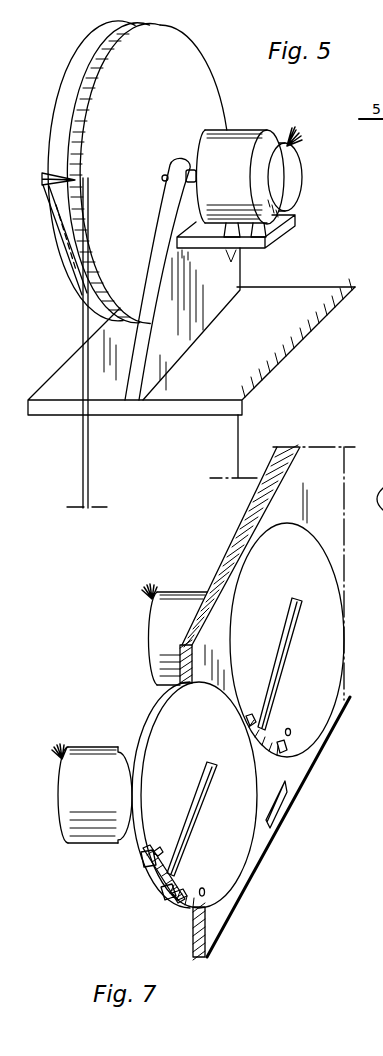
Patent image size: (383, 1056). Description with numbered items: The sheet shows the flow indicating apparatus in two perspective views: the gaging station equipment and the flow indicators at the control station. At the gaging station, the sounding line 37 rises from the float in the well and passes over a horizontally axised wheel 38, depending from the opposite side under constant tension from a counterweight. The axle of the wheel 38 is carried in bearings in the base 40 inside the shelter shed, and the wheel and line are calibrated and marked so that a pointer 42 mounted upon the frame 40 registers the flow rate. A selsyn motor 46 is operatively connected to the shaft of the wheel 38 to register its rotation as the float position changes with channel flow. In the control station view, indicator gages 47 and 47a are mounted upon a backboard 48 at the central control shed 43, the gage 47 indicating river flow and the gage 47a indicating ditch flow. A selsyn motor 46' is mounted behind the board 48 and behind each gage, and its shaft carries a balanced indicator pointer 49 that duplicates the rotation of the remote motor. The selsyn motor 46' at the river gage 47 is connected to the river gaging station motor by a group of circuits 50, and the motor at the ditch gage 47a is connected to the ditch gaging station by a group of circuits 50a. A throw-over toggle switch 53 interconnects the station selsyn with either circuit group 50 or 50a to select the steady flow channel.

In FIG. 5, the sounding line 37 is at (87, 457).
In FIG. 5, the wheel 38 is at (137, 172).
In FIG. 5, the base 40 is at (191, 378).
In FIG. 5, the pointer 42 is at (56, 174).
In FIG. 7, the central control shed 43 is at (371, 490).
In FIG. 5, the selsyn motor 46 is at (249, 183).
In FIG. 7, the selsyn motor 46' is at (132, 717).
In FIG. 7, the indicator gage 47 is at (194, 795).
In FIG. 7, the indicator gage 47a is at (287, 640).
In FIG. 7, the backboard 48 is at (240, 918).
In FIG. 7, the balanced indicator pointer 49 is at (279, 674).
In FIG. 5, the group of circuits 50 is at (298, 129).
In FIG. 7, the group of circuits 50 is at (58, 758).
In FIG. 7, the group of circuits 50a is at (150, 588).
In FIG. 7, the throw-over toggle switch 53 is at (282, 802).